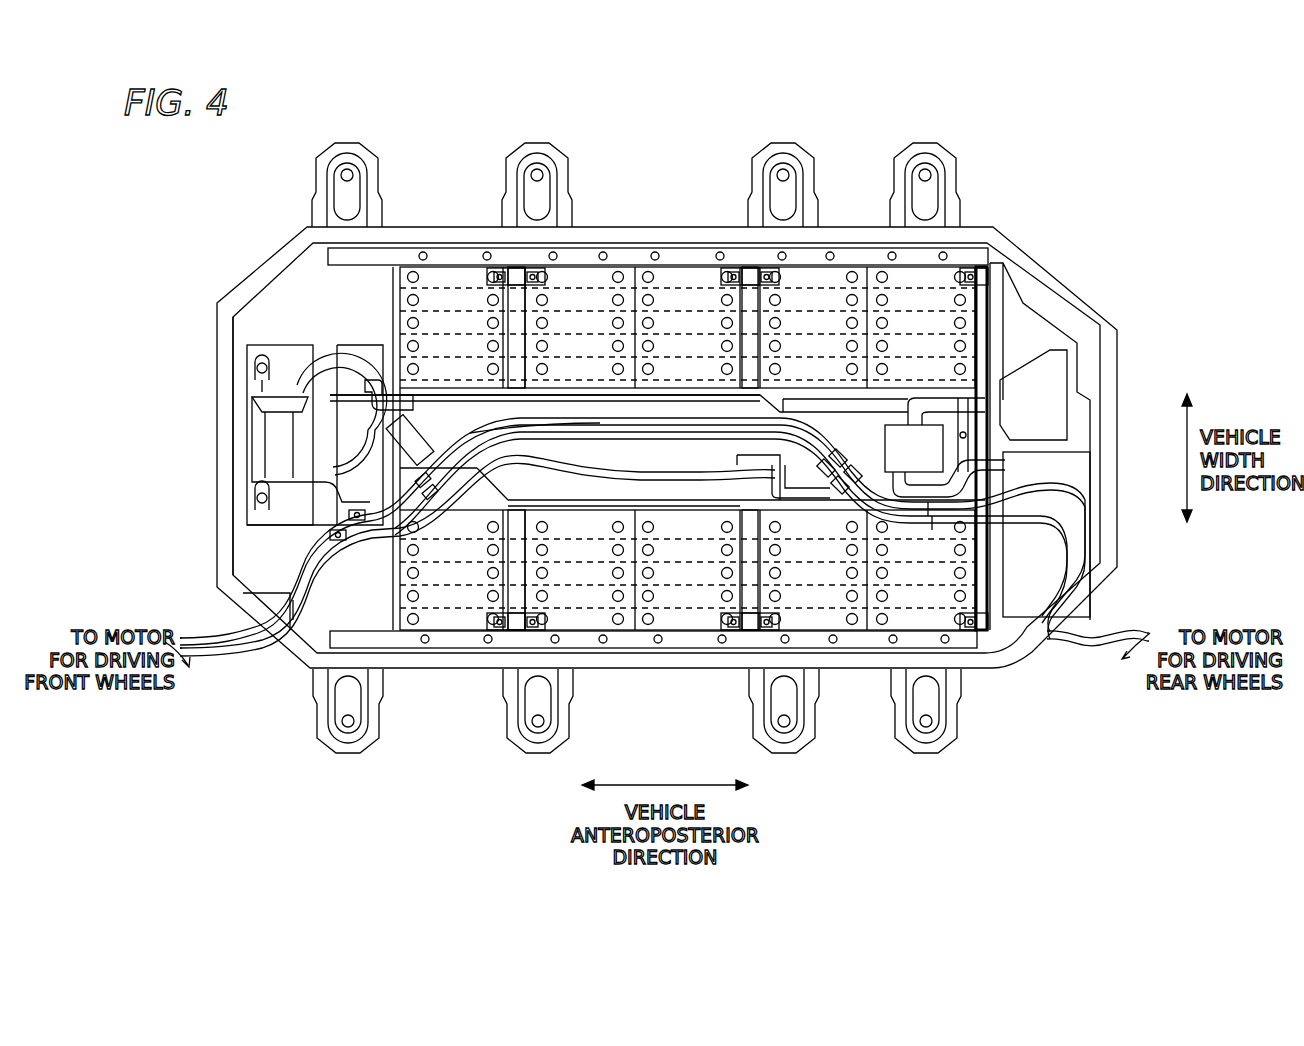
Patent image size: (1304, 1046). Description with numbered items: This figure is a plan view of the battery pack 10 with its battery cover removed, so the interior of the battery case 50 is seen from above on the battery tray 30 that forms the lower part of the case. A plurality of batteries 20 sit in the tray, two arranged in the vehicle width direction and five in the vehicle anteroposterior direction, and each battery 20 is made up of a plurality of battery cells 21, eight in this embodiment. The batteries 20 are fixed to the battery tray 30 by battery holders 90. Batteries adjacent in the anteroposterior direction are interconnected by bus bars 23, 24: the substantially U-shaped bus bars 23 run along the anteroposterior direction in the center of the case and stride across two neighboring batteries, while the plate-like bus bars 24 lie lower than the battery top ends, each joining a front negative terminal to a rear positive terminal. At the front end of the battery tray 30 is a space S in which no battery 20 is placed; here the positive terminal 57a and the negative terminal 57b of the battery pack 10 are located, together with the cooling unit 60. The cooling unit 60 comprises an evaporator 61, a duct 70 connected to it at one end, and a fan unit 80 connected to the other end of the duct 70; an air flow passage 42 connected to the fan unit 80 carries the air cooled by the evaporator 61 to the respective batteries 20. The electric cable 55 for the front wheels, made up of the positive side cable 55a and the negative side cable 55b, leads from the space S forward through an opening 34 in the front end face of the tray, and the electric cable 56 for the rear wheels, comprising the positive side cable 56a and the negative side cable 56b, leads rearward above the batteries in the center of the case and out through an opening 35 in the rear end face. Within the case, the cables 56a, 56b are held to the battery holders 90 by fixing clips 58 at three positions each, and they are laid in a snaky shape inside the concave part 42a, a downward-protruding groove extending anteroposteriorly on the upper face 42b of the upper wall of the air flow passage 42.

The battery pack 10 is at (667, 417).
The battery 20 is at (684, 448).
The battery cell 21 is at (590, 575).
The bus bar 23 is at (817, 400).
The bus bar 24 is at (516, 276).
The battery tray 30 is at (683, 232).
The opening 34 is at (287, 620).
The opening 35 is at (1027, 607).
The air flow passage 42 is at (621, 424).
The concave part 42a is at (528, 440).
The upper face 42b is at (520, 495).
The battery case 50 is at (656, 458).
The electric cable for the front wheels 55 is at (182, 723).
The positive side cable 55a is at (215, 652).
The negative side cable 55b is at (193, 667).
The electric cable for the rear wheels 56 is at (1117, 718).
The positive side cable 56a is at (1090, 642).
The negative side cable 56b is at (1113, 643).
The positive terminal 57a is at (345, 540).
The negative terminal 57b is at (360, 510).
The fixing clip 58 is at (447, 504).
The cooling unit 60 is at (290, 435).
The evaporator 61 is at (260, 432).
The duct 70 is at (277, 452).
The fan unit 80 is at (300, 463).
The battery holder 90 is at (860, 425).
The space S is at (305, 318).